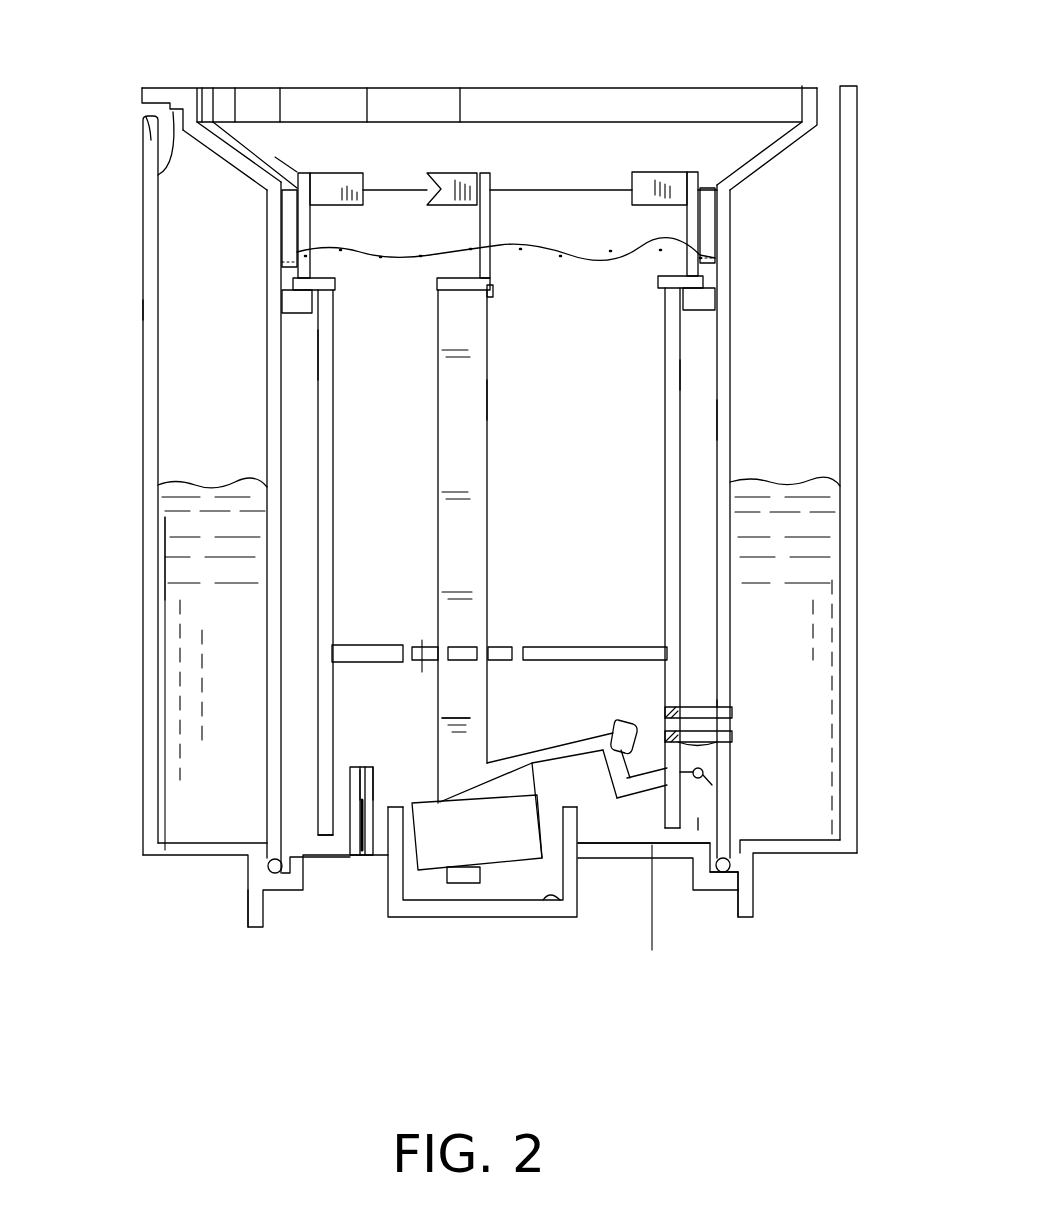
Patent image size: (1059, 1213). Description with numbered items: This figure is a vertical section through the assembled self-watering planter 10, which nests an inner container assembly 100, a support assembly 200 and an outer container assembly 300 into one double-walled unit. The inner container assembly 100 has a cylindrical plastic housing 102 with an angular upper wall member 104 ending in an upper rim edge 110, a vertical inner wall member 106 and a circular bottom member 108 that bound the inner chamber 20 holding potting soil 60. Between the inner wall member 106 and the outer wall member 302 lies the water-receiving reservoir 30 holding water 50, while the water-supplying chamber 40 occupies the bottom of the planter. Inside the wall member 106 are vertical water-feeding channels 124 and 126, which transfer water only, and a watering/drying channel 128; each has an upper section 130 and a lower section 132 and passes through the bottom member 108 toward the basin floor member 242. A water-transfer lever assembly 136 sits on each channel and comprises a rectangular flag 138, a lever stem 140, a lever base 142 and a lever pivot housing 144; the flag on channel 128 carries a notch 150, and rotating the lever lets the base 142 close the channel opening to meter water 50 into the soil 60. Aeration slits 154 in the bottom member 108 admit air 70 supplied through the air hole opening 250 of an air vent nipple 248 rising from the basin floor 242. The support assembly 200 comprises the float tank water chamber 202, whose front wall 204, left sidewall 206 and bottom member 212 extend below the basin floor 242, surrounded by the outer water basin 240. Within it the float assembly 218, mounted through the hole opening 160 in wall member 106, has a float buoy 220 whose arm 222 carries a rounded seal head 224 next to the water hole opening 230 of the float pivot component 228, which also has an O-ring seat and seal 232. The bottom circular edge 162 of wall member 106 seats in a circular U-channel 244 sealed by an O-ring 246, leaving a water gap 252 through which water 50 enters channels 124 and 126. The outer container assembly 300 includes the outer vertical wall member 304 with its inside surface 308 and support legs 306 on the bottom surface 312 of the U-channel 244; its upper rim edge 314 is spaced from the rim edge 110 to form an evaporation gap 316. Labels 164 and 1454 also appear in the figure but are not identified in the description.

The self-watering planter assembly 10 is at (172, 1011).
The inner container or chamber 20 is at (393, 495).
The water-receiving reservoir 30 is at (182, 518).
The water-supplying chamber 40 is at (698, 822).
The water 50 is at (233, 480).
The potting soil 60 is at (585, 245).
The air 70 is at (355, 860).
The inner container assembly 100 is at (607, 454).
The cylindrical plastic housing 102 is at (735, 425).
The angular upper wall member 104 is at (233, 180).
The inner wall member 106 is at (275, 400).
The circular bottom member 108 is at (338, 645).
The upper rim edge 110 is at (165, 88).
The water-feeding channel 124 is at (302, 422).
The water-feeding channel 126 is at (695, 385).
The water-feeding channel 128 is at (480, 525).
The upper section 130 is at (330, 360).
The lower section 132 is at (438, 703).
The water-transfer lever assembly 136 is at (468, 228).
The rectangular flag 138 is at (333, 172).
The lever stem 140 is at (310, 232).
The lever base 142 is at (327, 272).
The lever pivot housing 144 is at (303, 305).
The bracket 1454 is at (690, 310).
The notch 150 is at (460, 173).
The aeration slits 154 is at (487, 648).
The hole opening 160 is at (725, 705).
The bottom circular edge 162 is at (277, 860).
The inlet 164 is at (158, 175).
The support assembly 200 is at (523, 832).
The float tank water chamber 202 is at (495, 880).
The front wall 204 is at (375, 850).
The left sidewall 206 is at (587, 815).
The bottom member 212 is at (575, 912).
The float assembly 218 is at (512, 878).
The float buoy 220 is at (498, 890).
The float buoy arm 222 is at (503, 778).
The rounded float seal head 224 is at (625, 720).
The float pivot component 228 is at (703, 772).
The water hole opening 230 is at (727, 725).
The O-ring seat and seal 232 is at (733, 738).
The outer water basin or chamber 240 is at (422, 670).
The water basin floor member 242 is at (335, 843).
The circular U-channel 244 is at (755, 860).
The O-ring 246 is at (755, 878).
The air vent nipple 248 is at (375, 770).
The air hole opening 250 is at (358, 768).
The water gap 252 is at (325, 835).
The outer container assembly 300 is at (103, 427).
The outer wall member 302 is at (141, 695).
The outer cylindrical vertical wall member 304 is at (143, 762).
The support legs 306 is at (255, 917).
The inside surface 308 is at (160, 255).
The bottom surface 312 is at (725, 890).
The upper rim edge 314 is at (147, 140).
The evaporation gap 316 is at (147, 110).